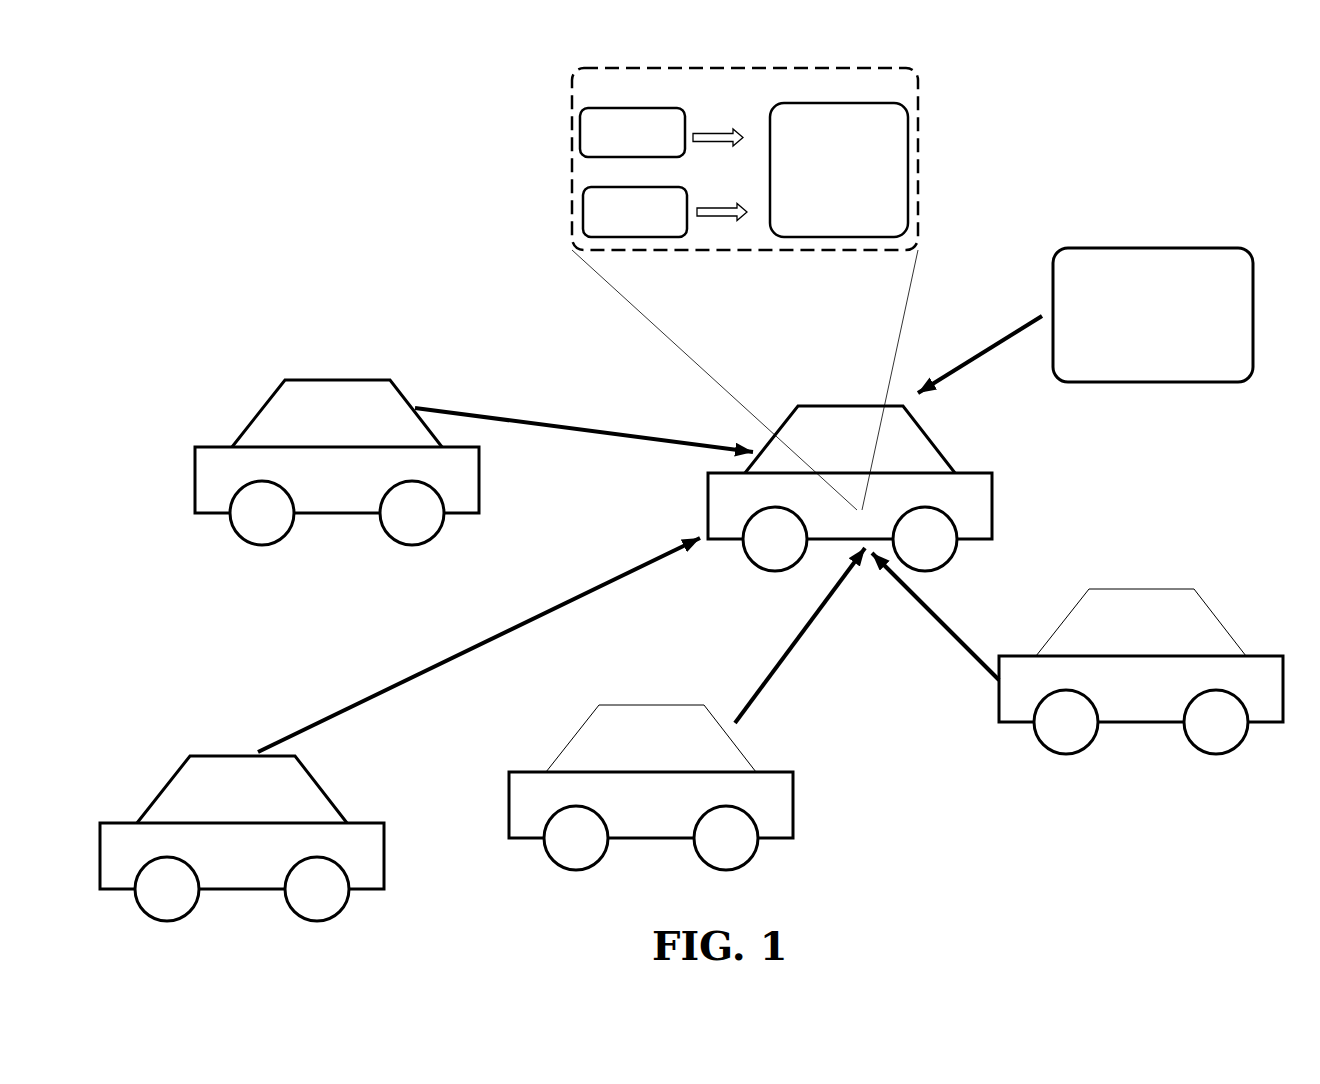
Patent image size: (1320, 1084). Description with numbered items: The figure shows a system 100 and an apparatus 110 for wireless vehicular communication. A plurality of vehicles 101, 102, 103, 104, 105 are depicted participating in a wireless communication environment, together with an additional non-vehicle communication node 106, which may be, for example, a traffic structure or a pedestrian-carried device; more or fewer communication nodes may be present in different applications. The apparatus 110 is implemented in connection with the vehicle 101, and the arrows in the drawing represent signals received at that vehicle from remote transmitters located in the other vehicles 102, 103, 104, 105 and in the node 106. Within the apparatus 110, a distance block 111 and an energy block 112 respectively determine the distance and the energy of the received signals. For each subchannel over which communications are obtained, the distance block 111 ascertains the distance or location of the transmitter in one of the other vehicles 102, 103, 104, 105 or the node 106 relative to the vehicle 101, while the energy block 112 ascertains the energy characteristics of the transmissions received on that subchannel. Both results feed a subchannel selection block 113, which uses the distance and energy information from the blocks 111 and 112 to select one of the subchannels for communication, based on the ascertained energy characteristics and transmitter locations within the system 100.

The system 100 is at (1245, 83).
The vehicle 101 is at (924, 426).
The vehicle 102 is at (1147, 589).
The vehicle 103 is at (637, 706).
The vehicle 104 is at (336, 380).
The vehicle 105 is at (320, 783).
The non-vehicle communication node 106 is at (1212, 248).
The apparatus 110 is at (880, 70).
The distance block 111 is at (657, 108).
The energy block 112 is at (659, 187).
The subchannel selection block 113 is at (856, 103).